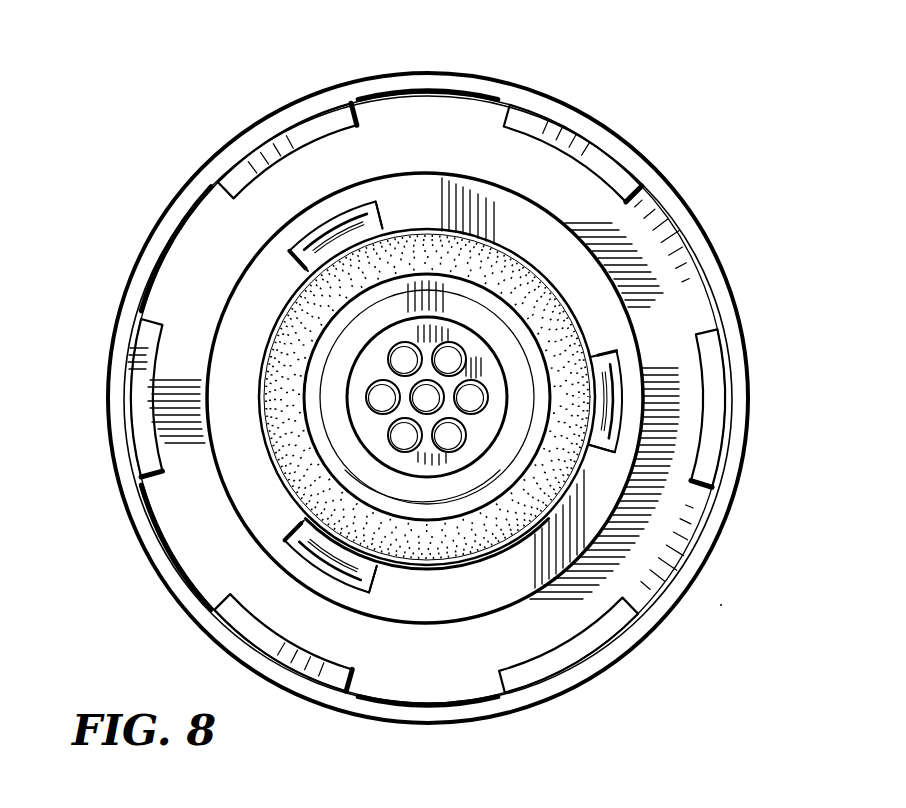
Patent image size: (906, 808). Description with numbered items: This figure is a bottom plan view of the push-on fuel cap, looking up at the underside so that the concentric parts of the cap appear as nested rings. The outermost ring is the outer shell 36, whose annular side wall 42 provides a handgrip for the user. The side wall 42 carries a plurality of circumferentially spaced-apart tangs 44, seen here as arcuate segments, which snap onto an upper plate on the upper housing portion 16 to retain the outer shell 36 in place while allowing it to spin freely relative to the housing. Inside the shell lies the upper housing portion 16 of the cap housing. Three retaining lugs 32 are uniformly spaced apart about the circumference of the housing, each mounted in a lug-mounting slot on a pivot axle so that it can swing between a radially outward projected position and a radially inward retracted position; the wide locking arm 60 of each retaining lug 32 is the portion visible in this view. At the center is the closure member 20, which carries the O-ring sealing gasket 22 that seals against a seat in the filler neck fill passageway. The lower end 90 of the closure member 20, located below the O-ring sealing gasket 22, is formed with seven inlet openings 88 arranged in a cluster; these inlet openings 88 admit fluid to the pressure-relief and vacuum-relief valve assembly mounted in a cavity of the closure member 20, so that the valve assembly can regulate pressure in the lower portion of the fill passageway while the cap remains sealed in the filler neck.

The upper housing portion 16 is at (670, 292).
The closure member 20 is at (440, 492).
The O-ring sealing gasket 22 is at (302, 482).
The retaining lug 32 is at (317, 255).
The outer shell 36 is at (609, 123).
The annular side wall 42 is at (184, 182).
The tangs 44 is at (287, 133).
The wide locking arm 60 is at (300, 262).
The inlet openings 88 is at (436, 372).
The lower end 90 is at (403, 330).